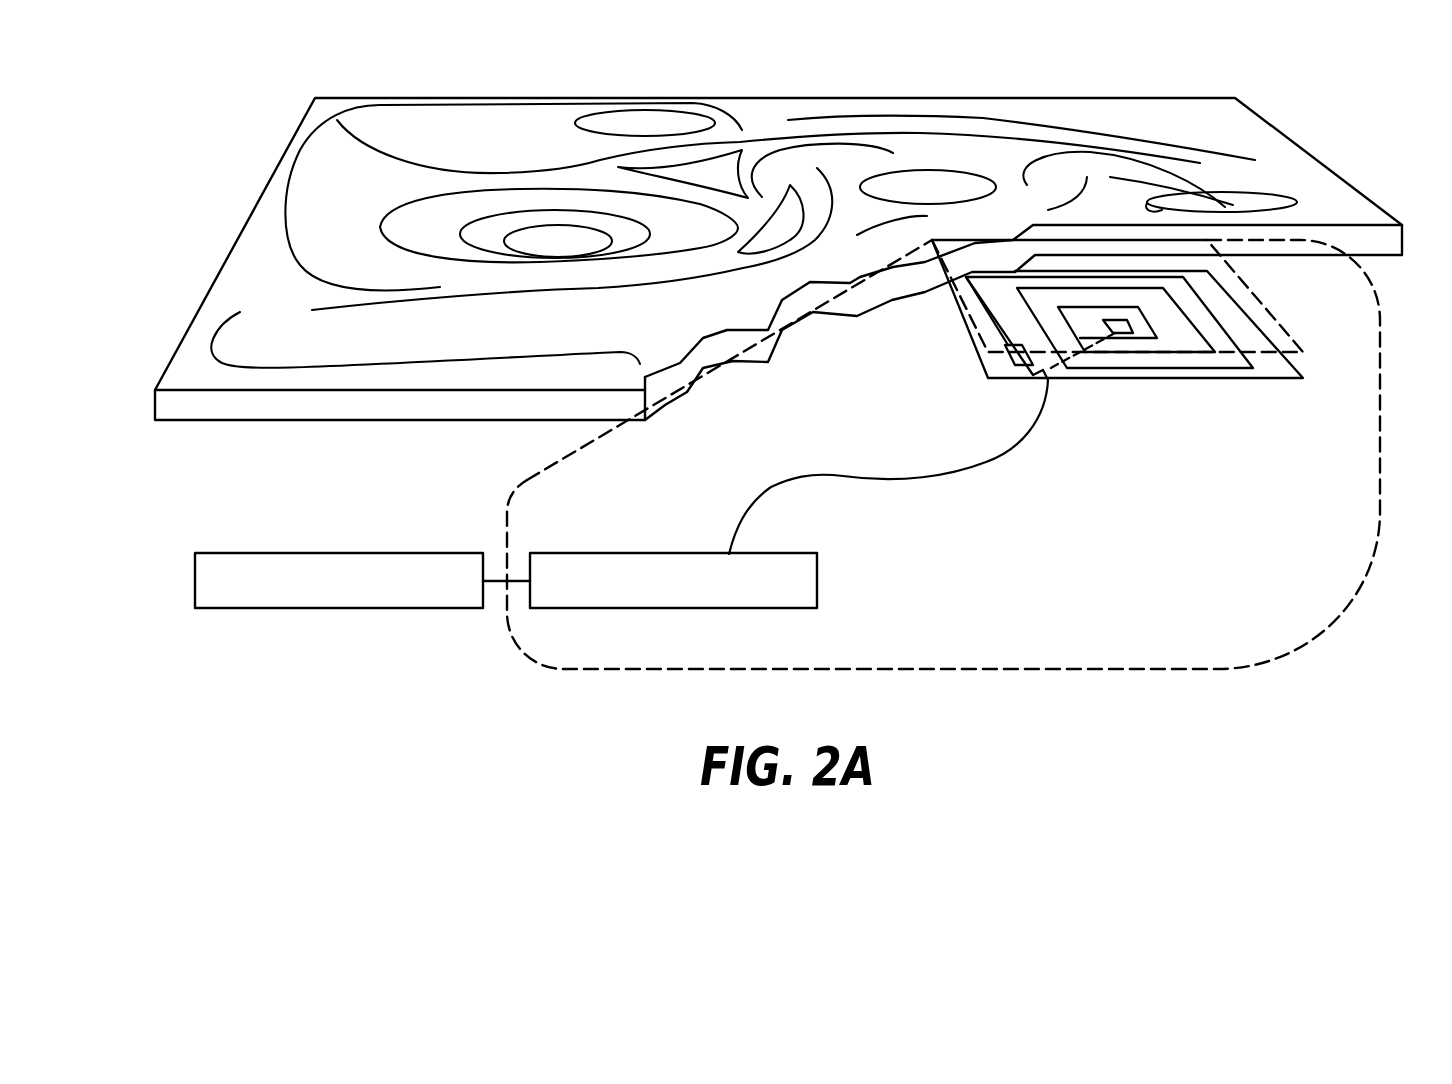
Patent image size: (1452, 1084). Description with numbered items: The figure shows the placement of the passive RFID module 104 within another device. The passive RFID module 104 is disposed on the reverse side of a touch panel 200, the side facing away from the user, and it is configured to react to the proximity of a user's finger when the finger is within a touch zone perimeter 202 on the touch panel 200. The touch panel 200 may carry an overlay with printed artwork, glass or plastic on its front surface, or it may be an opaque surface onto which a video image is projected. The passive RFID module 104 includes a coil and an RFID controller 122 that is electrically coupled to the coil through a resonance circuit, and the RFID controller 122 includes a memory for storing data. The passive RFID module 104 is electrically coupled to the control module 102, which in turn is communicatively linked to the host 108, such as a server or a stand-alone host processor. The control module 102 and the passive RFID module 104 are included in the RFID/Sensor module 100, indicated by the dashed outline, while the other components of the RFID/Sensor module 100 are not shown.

The RFID/Sensor module 100 is at (1360, 610).
The control module 102 is at (817, 582).
The passive RFID module 104 is at (1243, 380).
The host 108 is at (341, 553).
The RFID controller 122 is at (1005, 355).
The touch panel 200 is at (237, 242).
The touch zone perimeter 202 is at (1255, 292).